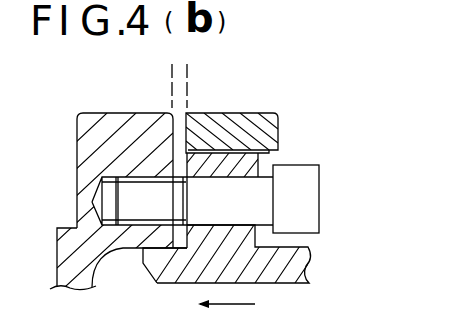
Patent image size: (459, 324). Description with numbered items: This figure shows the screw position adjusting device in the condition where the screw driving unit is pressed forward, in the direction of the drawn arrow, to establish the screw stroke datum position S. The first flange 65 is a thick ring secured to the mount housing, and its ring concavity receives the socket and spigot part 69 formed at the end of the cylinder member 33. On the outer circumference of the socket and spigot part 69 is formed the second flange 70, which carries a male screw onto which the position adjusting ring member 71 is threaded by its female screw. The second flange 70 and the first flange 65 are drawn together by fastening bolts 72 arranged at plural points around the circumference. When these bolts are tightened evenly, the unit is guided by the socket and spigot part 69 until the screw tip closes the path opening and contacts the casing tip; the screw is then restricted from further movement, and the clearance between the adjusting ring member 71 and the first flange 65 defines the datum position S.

The first flange 65 is at (91, 122).
The screw stroke datum position S is at (183, 72).
The position adjusting ring member 71 is at (263, 112).
The second flange 70 is at (252, 167).
The fastening bolt 72 is at (310, 192).
The cylinder member 33 is at (282, 278).
The socket and spigot part 69 is at (160, 272).